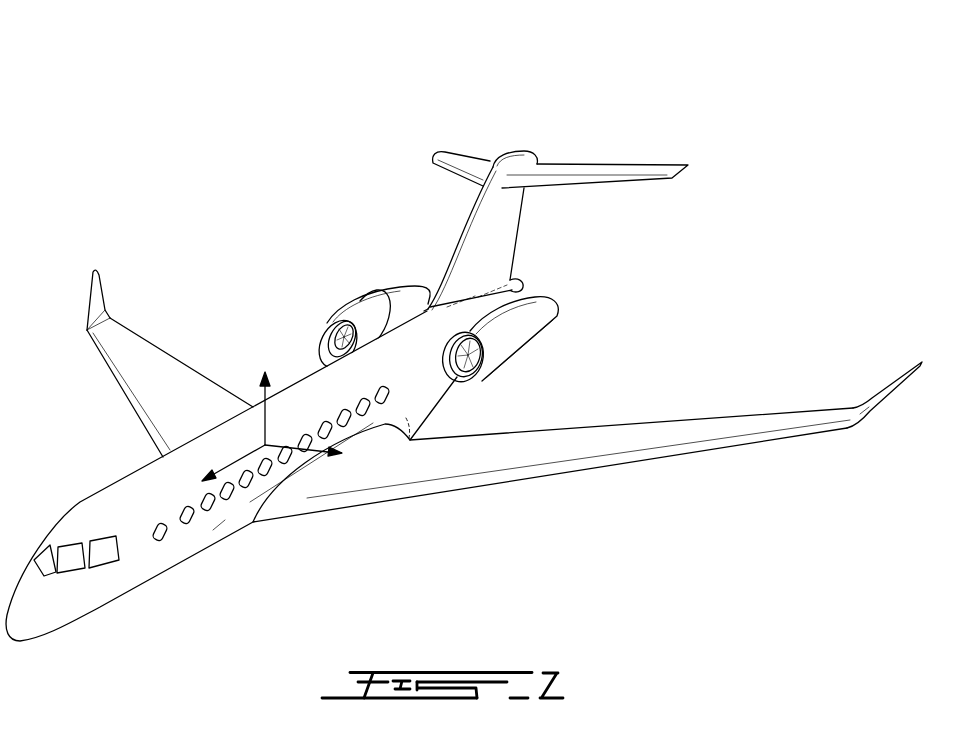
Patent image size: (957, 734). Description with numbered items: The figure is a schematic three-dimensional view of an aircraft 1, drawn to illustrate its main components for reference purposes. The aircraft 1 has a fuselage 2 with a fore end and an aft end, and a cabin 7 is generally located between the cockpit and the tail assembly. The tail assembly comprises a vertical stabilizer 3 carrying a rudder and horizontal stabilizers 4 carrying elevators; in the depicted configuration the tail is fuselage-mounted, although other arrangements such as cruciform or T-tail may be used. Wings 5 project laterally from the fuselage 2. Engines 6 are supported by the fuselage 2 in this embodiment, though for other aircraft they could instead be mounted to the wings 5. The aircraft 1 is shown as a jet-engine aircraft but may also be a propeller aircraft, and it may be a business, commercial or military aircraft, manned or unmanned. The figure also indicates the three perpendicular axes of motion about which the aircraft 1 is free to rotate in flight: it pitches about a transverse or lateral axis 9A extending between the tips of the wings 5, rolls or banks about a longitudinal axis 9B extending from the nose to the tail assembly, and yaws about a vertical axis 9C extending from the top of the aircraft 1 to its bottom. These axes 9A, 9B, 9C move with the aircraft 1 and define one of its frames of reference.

The aircraft 1 is at (222, 173).
The fuselage 2 is at (104, 481).
The vertical stabilizer 3 is at (493, 250).
The horizontal stabilizers 4 is at (583, 170).
The wings 5 is at (142, 363).
The engines 6 is at (387, 308).
The cabin 7 is at (143, 505).
The lateral axis 9A is at (300, 449).
The longitudinal axis 9B is at (233, 466).
The vertical axis 9C is at (267, 408).